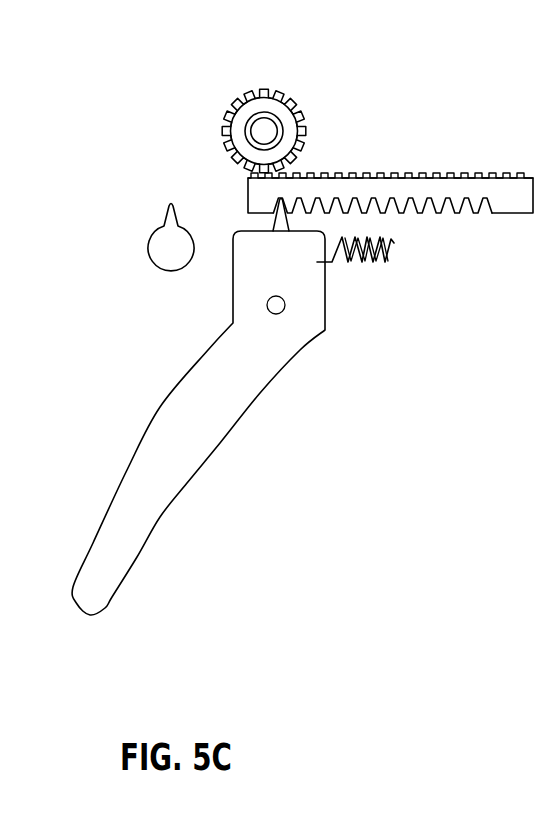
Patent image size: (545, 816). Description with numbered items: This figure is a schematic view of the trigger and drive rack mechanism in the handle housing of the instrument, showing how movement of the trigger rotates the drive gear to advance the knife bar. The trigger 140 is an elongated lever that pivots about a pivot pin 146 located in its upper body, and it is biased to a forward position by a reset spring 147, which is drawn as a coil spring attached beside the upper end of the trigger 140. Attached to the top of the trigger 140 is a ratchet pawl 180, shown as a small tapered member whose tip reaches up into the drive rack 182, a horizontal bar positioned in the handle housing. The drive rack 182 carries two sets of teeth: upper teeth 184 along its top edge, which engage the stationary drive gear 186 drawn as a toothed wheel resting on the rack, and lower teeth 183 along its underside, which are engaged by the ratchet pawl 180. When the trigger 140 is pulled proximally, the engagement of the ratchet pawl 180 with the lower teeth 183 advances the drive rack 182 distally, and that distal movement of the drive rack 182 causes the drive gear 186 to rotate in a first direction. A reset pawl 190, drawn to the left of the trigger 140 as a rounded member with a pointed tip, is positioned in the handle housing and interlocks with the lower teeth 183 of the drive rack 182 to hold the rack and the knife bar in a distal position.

The trigger 140 is at (157, 507).
The pivot pin 146 is at (278, 310).
The reset spring 147 is at (372, 265).
The ratchet pawl 180 is at (277, 222).
The drive rack 182 is at (482, 185).
The lower teeth 183 is at (473, 216).
The upper teeth 184 is at (315, 173).
The drive gear 186 is at (255, 110).
The reset pawl 190 is at (162, 257).